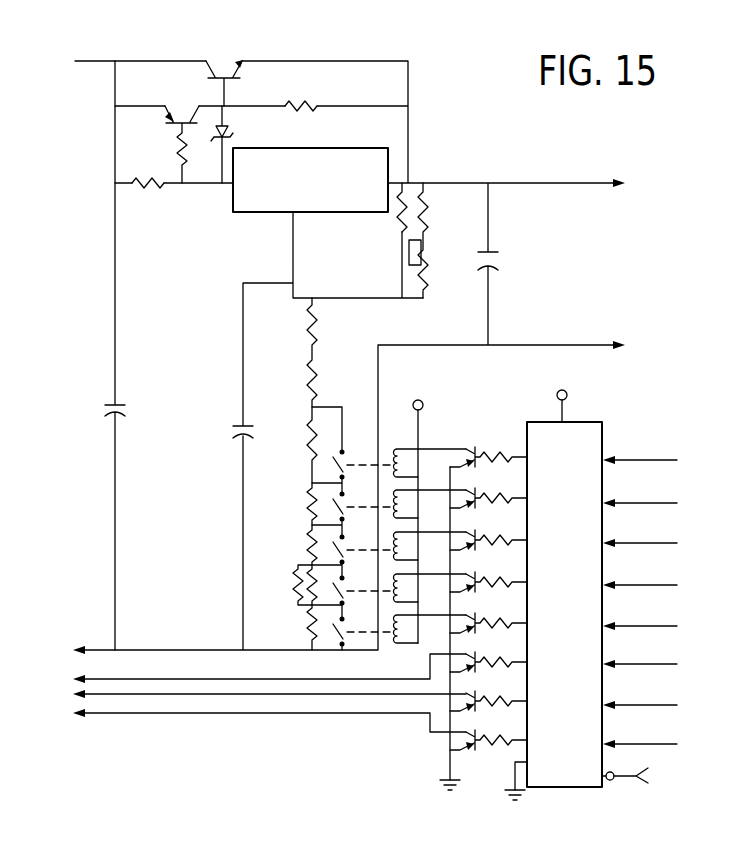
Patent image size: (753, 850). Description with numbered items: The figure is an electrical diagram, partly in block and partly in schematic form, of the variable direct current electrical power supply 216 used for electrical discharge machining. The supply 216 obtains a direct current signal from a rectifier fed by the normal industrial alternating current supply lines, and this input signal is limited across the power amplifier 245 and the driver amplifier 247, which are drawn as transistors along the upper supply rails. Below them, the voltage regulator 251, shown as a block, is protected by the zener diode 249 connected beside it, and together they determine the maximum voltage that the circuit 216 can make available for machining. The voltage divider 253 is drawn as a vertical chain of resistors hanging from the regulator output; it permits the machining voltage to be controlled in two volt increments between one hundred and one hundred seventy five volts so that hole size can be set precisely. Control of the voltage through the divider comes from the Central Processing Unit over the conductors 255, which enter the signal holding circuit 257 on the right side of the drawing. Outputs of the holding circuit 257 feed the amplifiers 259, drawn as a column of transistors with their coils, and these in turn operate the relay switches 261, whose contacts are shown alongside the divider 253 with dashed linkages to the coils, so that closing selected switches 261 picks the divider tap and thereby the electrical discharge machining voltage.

The variable direct current electrical power supply 216 is at (113, 296).
The power amplifier 245 is at (220, 62).
The driver amplifier 247 is at (197, 110).
The zener diode 249 is at (228, 134).
The voltage regulator 251 is at (262, 213).
The voltage divider 253 is at (318, 342).
The conductors 255 is at (665, 458).
The signal holding circuit 257 is at (590, 420).
The amplifiers 259 is at (465, 446).
The relay switches 261 is at (318, 470).